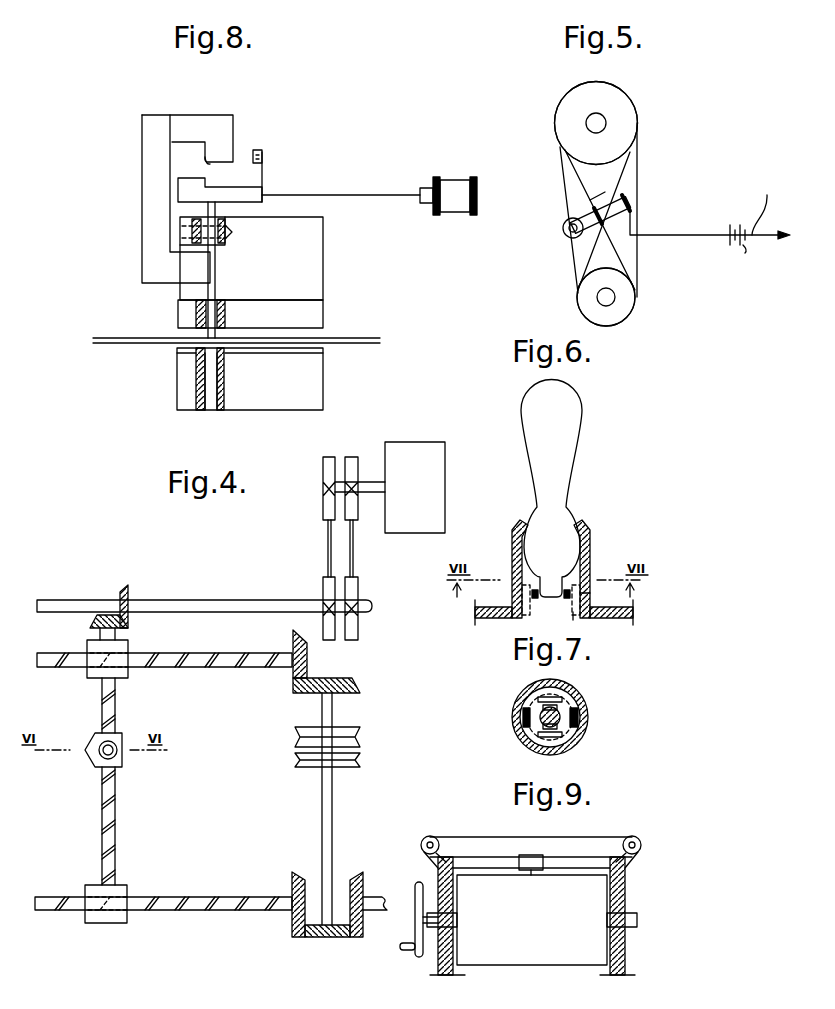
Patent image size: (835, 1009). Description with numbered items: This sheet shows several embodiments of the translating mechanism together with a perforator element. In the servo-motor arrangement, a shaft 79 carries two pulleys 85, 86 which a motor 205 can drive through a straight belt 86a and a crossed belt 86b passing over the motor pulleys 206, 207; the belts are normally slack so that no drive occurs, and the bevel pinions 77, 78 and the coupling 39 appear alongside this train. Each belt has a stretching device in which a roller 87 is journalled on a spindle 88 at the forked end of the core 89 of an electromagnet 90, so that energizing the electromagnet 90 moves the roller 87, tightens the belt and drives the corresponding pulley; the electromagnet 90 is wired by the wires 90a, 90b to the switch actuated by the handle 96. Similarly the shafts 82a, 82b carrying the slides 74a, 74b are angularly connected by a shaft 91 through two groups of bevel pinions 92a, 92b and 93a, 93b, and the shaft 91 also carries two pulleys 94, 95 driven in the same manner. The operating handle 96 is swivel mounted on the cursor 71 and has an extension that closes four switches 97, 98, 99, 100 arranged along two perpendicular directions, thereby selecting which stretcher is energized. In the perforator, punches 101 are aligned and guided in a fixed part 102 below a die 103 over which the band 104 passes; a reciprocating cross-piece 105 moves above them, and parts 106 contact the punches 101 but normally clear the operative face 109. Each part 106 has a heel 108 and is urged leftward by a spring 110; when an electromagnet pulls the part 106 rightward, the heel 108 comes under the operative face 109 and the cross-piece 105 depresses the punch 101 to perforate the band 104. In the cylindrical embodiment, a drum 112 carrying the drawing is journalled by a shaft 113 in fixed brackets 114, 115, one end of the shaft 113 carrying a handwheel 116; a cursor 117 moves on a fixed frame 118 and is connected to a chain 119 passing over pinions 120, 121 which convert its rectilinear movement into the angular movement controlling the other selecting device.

In FIG. 5, the coupling 39 is at (734, 248).
In FIG. 6, the cursor 71 is at (587, 530).
In FIG. 7, the cursor 71 is at (588, 710).
In FIG. 4, the cursor 71 is at (90, 760).
In FIG. 4, the slide 74a is at (108, 912).
In FIG. 4, the slide 74b is at (110, 648).
In FIG. 4, the bevel gear 77 is at (110, 615).
In FIG. 4, the bevel gear 78 is at (127, 600).
In FIG. 4, the shaft 79 is at (210, 605).
In FIG. 4, the shaft 82a is at (182, 905).
In FIG. 4, the shaft 82b is at (205, 658).
In FIG. 5, the pulley 85 is at (634, 297).
In FIG. 4, the pulley 85 is at (328, 580).
In FIG. 5, the pulley 86 is at (606, 297).
In FIG. 4, the pulley 86 is at (358, 578).
In FIG. 5, the straight belt 86a is at (638, 170).
In FIG. 4, the straight belt 86a is at (353, 555).
In FIG. 5, the crossed belt 86b is at (630, 153).
In FIG. 4, the crossed belt 86b is at (328, 545).
In FIG. 5, the roller 87 is at (568, 233).
In FIG. 5, the spindle 88 is at (575, 217).
In FIG. 5, the core 89 is at (600, 227).
In FIG. 5, the electromagnet 90 is at (632, 223).
In FIG. 5, the wire 90a is at (590, 200).
In FIG. 6, the wire 90a is at (590, 593).
In FIG. 5, the wire 90b is at (758, 204).
In FIG. 6, the wire 90b is at (573, 620).
In FIG. 4, the shaft 91 is at (325, 818).
In FIG. 4, the bevel pinion 92a is at (297, 910).
In FIG. 4, the bevel pinion 92b is at (328, 937).
In FIG. 4, the bevel pinion 93a is at (308, 662).
In FIG. 4, the bevel pinion 93b is at (350, 682).
In FIG. 4, the pulley 94 is at (347, 733).
In FIG. 4, the pulley 95 is at (337, 765).
In FIG. 6, the operating handle 96 is at (565, 428).
In FIG. 4, the operating handle 96 is at (103, 750).
In FIG. 6, the switch 97 is at (517, 608).
In FIG. 7, the switch 97 is at (523, 715).
In FIG. 6, the switch 98 is at (551, 600).
In FIG. 7, the switch 98 is at (567, 690).
In FIG. 6, the switch 99 is at (585, 610).
In FIG. 7, the switch 99 is at (582, 722).
In FIG. 7, the switch 100 is at (565, 750).
In FIG. 8, the punch 101 is at (217, 312).
In FIG. 8, the fixed part 102 is at (307, 275).
In FIG. 8, the die 103 is at (307, 375).
In FIG. 8, the band 104 is at (340, 343).
In FIG. 8, the cross-piece 105 is at (213, 133).
In FIG. 8, the part 106 is at (217, 193).
In FIG. 8, the heel 108 is at (188, 171).
In FIG. 8, the operative face 109 is at (207, 166).
In FIG. 8, the spring 110 is at (262, 175).
In FIG. 9, the drum 112 is at (532, 943).
In FIG. 9, the shaft 113 is at (443, 921).
In FIG. 9, the fixed bracket 114 is at (628, 962).
In FIG. 9, the fixed bracket 115 is at (438, 962).
In FIG. 9, the handwheel 116 is at (420, 928).
In FIG. 9, the cursor 117 is at (532, 862).
In FIG. 9, the fixed frame 118 is at (580, 867).
In FIG. 9, the chain 119 is at (487, 843).
In FIG. 9, the pinion 120 is at (431, 837).
In FIG. 9, the pinion 121 is at (635, 837).
In FIG. 4, the motor 205 is at (445, 525).
In FIG. 5, the pulley 206 is at (580, 103).
In FIG. 4, the pulley 206 is at (357, 447).
In FIG. 5, the pulley 207 is at (596, 123).
In FIG. 4, the pulley 207 is at (328, 457).